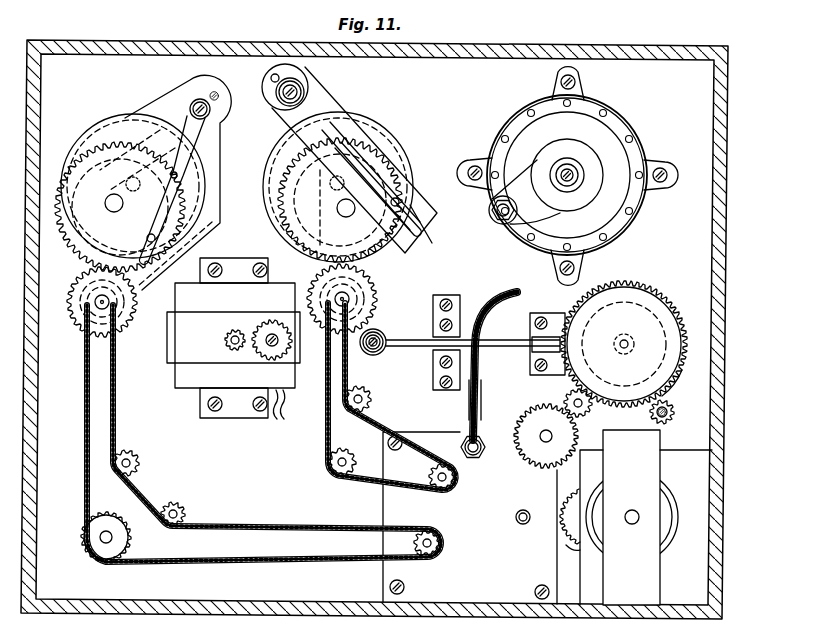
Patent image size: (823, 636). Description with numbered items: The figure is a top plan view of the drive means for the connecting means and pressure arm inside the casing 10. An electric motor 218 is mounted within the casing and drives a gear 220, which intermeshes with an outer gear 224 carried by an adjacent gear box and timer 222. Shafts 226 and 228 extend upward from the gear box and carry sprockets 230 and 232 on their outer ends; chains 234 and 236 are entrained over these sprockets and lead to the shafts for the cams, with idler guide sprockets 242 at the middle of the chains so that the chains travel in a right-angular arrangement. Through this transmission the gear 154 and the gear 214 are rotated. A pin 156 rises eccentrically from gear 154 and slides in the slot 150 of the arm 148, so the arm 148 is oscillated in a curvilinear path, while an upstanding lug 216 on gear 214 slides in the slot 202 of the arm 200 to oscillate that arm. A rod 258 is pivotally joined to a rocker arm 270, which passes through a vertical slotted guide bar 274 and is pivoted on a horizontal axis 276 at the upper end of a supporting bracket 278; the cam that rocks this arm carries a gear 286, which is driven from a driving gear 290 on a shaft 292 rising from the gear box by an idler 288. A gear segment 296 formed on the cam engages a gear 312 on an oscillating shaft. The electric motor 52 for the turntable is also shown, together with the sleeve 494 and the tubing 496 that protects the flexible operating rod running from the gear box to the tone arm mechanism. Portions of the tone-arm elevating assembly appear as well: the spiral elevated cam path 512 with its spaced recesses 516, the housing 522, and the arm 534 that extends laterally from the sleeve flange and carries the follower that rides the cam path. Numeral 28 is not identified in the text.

The casing 10 is at (720, 486).
The shaft pivot 28 is at (373, 350).
The electric motor 52 is at (230, 341).
The arm 148 is at (190, 137).
The slot 150 is at (167, 198).
The gear 154 is at (61, 237).
The pin 156 is at (117, 218).
The arm 200 is at (323, 130).
The slot 202 is at (377, 183).
The gear 214 is at (395, 185).
The lug 216 is at (400, 203).
The electric motor 218 is at (646, 517).
The gear 220 is at (568, 547).
The gear box and timer 222 is at (389, 586).
The outer gear 224 is at (557, 512).
The shaft 226 is at (447, 482).
The shaft 228 is at (431, 543).
The sprocket 230 is at (433, 466).
The sprocket 232 is at (427, 553).
The chain 234 is at (302, 528).
The chain 236 is at (375, 418).
The idler guide sprockets 242 is at (120, 520).
The rod 258 is at (376, 346).
The rocker arm 270 is at (412, 347).
The vertical slotted guide bar 274 is at (456, 328).
The horizontal pivot 276 is at (533, 333).
The supporting bracket 278 is at (545, 325).
The gear 286 is at (662, 312).
The idler 288 is at (573, 400).
The driving gear 290 is at (570, 439).
The shaft 292 is at (545, 436).
The gear segment 296 is at (680, 385).
The gear 312 is at (675, 413).
The sleeve 494 is at (520, 291).
The tubing 496 is at (481, 364).
The elevated cam path 512 is at (635, 148).
The recesses 516 is at (630, 214).
The housing 522 is at (594, 190).
The arm 534 is at (523, 213).